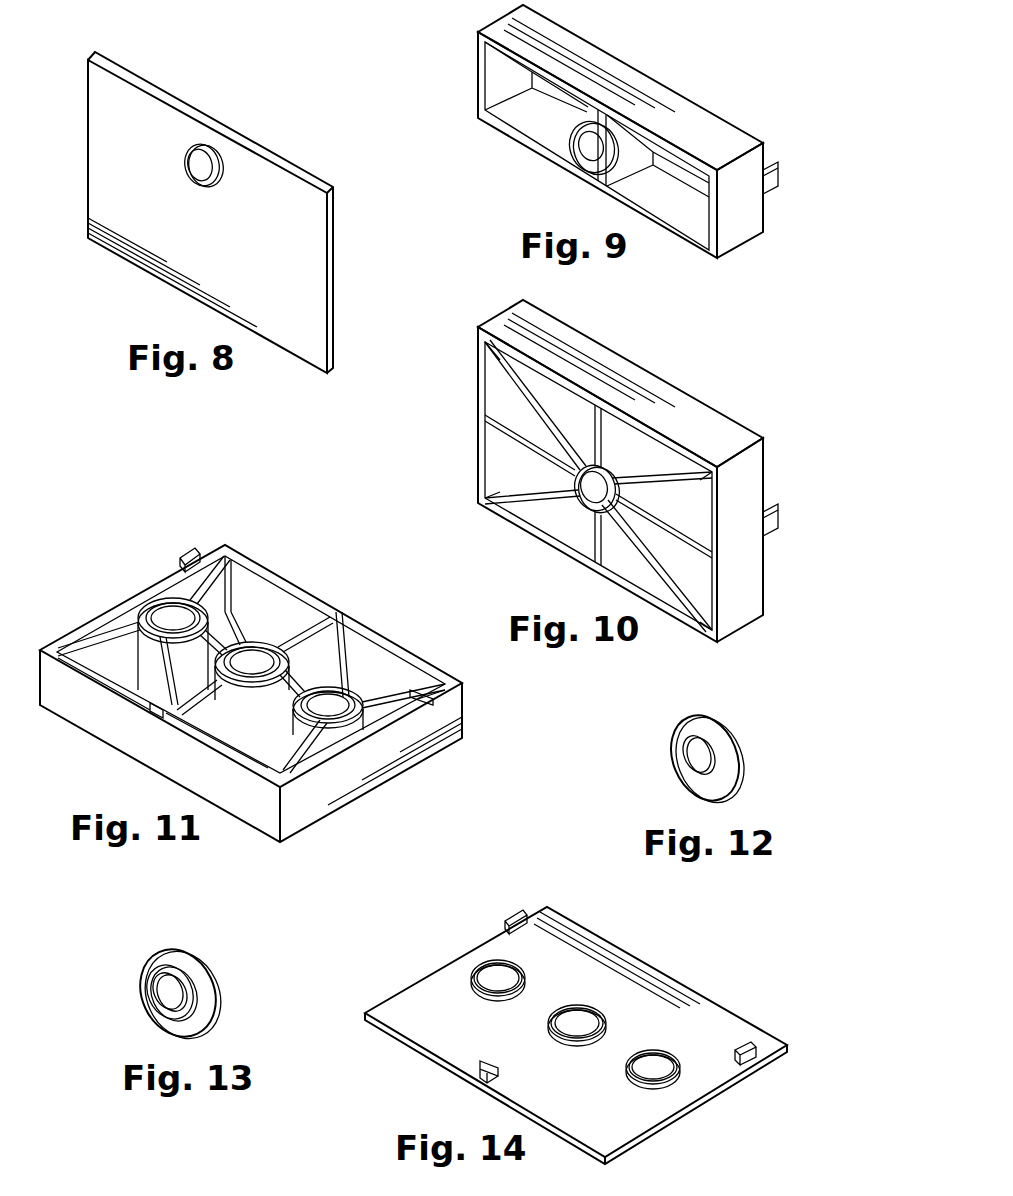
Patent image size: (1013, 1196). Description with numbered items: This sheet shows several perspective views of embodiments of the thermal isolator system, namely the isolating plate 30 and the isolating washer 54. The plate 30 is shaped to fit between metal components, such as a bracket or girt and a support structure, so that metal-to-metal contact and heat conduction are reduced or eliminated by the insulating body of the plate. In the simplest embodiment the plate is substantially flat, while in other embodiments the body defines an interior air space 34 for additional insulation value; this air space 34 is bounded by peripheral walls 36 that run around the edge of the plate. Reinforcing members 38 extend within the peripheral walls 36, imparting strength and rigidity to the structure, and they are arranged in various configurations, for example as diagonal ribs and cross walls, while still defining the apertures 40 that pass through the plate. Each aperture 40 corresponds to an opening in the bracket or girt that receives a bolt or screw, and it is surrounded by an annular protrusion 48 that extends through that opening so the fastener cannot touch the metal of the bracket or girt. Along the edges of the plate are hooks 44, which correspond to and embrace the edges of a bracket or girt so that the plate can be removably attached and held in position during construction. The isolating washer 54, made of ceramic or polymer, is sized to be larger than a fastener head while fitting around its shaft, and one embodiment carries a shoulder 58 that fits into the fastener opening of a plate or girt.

In FIG. 8, the plate 30 is at (218, 118).
In FIG. 9, the plate 30 is at (648, 72).
In FIG. 10, the plate 30 is at (712, 402).
In FIG. 11, the plate 30 is at (462, 708).
In FIG. 14, the plate 30 is at (668, 990).
In FIG. 9, the interior air space 34 is at (493, 78).
In FIG. 10, the interior air space 34 is at (493, 383).
In FIG. 11, the interior air space 34 is at (283, 602).
In FIG. 10, the peripheral walls 36 is at (652, 395).
In FIG. 11, the peripheral walls 36 is at (112, 605).
In FIG. 10, the reinforcing members 38 is at (685, 465).
In FIG. 11, the reinforcing members 38 is at (92, 630).
In FIG. 8, the aperture 40 is at (202, 170).
In FIG. 9, the aperture 40 is at (588, 150).
In FIG. 10, the aperture 40 is at (590, 490).
In FIG. 11, the aperture 40 is at (172, 613).
In FIG. 14, the aperture 40 is at (493, 980).
In FIG. 9, the hooks 44 is at (776, 172).
In FIG. 10, the hooks 44 is at (778, 514).
In FIG. 11, the hooks 44 is at (186, 546).
In FIG. 14, the hooks 44 is at (510, 912).
In FIG. 8, the annular protrusion 48 is at (185, 169).
In FIG. 9, the annular protrusion 48 is at (592, 125).
In FIG. 10, the annular protrusion 48 is at (590, 462).
In FIG. 14, the annular protrusion 48 is at (636, 1083).
In FIG. 12, the washer 54 is at (735, 740).
In FIG. 13, the washer 54 is at (205, 975).
In FIG. 13, the shoulder 58 is at (158, 1017).